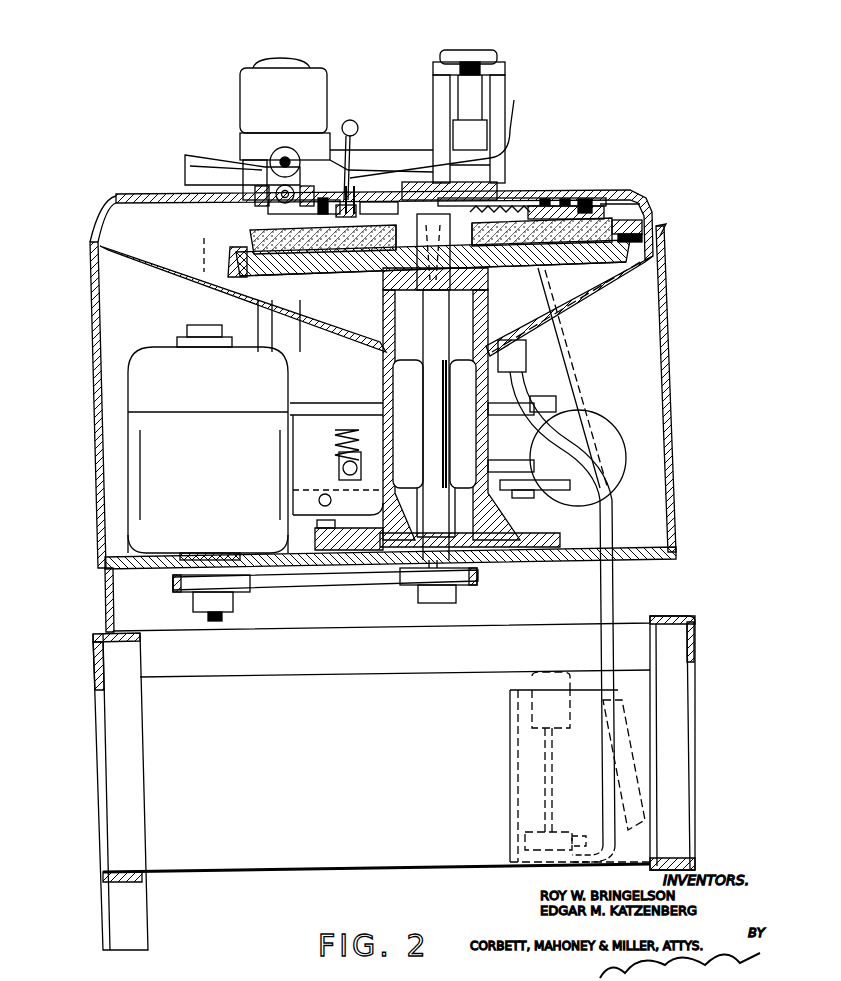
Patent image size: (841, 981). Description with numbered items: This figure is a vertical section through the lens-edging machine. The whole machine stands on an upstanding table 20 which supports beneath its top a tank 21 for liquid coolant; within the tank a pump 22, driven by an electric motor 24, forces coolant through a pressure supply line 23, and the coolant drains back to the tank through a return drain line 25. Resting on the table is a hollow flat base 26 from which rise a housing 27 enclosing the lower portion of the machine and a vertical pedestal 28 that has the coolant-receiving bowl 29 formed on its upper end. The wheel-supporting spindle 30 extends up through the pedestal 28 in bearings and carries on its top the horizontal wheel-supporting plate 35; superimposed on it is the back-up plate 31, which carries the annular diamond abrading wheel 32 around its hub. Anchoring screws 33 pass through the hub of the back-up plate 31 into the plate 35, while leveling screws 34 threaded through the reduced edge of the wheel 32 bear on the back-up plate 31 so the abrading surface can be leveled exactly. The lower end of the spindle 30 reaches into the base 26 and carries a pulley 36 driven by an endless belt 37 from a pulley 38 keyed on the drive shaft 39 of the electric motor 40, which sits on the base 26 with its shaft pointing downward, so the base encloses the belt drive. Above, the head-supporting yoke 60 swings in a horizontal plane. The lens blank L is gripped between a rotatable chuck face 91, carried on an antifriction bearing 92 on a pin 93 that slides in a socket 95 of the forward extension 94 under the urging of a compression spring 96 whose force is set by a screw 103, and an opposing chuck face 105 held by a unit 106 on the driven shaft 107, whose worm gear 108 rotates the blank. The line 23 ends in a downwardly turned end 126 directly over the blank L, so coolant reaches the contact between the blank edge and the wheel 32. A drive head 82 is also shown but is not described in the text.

The table 20 is at (676, 746).
The tank 21 is at (522, 774).
The pump 22 is at (522, 848).
The pressure supply line 23 is at (578, 422).
The electric motor 24 is at (530, 708).
The return drain line 25 is at (618, 738).
The base 26 is at (652, 546).
The housing 27 is at (678, 418).
The pedestal 28 is at (392, 388).
The coolant-receiving bowl 29 is at (612, 210).
The wheel-supporting spindle 30 is at (436, 400).
The back-up plate 31 is at (628, 224).
The abrading wheel 32 is at (606, 205).
The anchoring screws 33 is at (470, 262).
The leveling screws 34 is at (632, 236).
The wheel-supporting plate 35 is at (565, 262).
The pulley 36 is at (478, 590).
The endless belt 37 is at (345, 583).
The pulley 38 is at (173, 596).
The drive shaft 39 is at (224, 614).
The electric motor 40 is at (146, 390).
The head-supporting yoke 60 is at (198, 155).
The drive head 82 is at (486, 54).
The chuck face 91 is at (384, 205).
The antifriction bearing 92 is at (360, 252).
The pin 93 is at (388, 210).
The forward extension 94 is at (482, 190).
The socket 95 is at (590, 192).
The compression spring 96 is at (516, 205).
The screw 103 is at (560, 194).
The chuck face 105 is at (340, 204).
The unit 106 is at (318, 272).
The driven shaft 107 is at (262, 276).
The worm gear 108 is at (208, 262).
The downwardly turned end 126 is at (352, 195).
The lens blank L is at (350, 180).